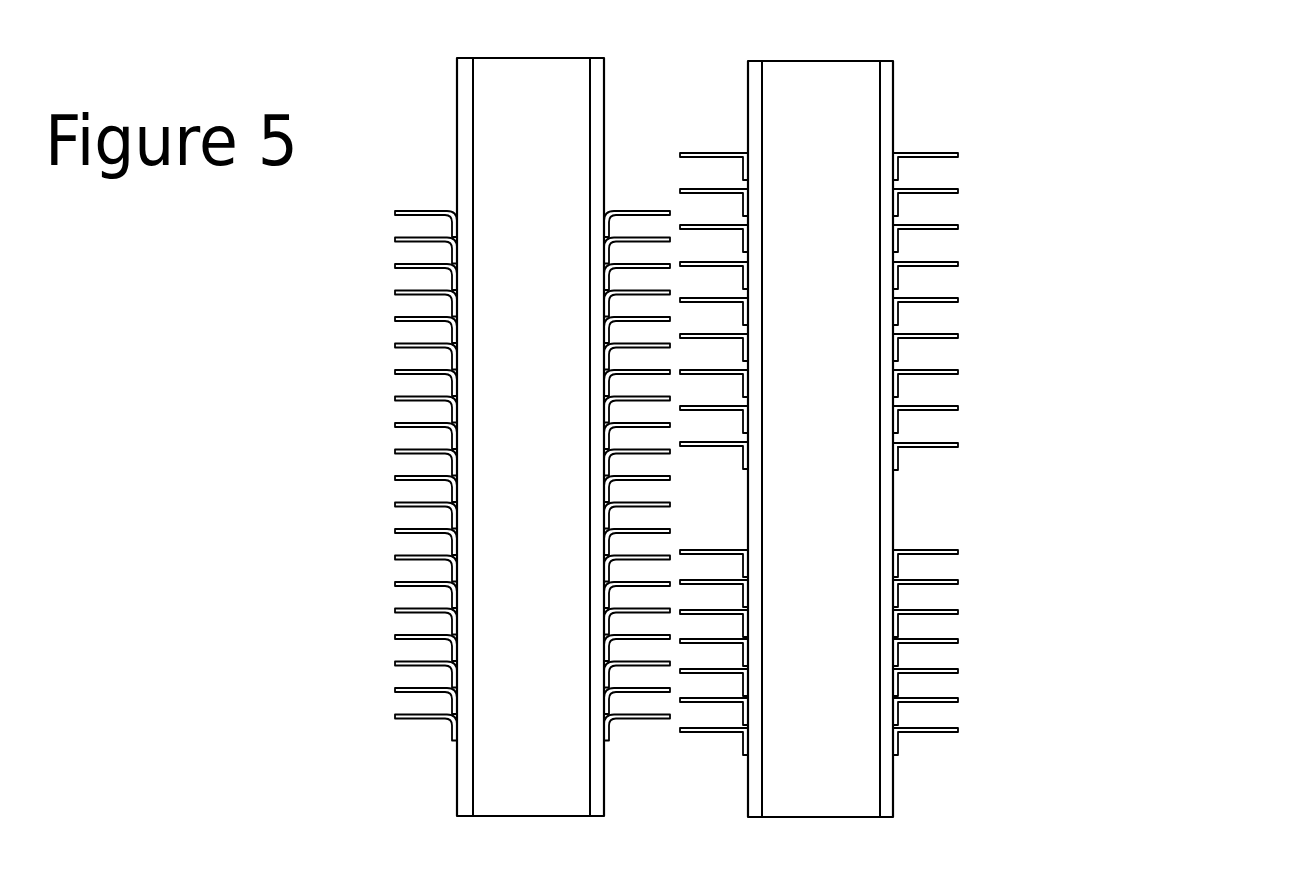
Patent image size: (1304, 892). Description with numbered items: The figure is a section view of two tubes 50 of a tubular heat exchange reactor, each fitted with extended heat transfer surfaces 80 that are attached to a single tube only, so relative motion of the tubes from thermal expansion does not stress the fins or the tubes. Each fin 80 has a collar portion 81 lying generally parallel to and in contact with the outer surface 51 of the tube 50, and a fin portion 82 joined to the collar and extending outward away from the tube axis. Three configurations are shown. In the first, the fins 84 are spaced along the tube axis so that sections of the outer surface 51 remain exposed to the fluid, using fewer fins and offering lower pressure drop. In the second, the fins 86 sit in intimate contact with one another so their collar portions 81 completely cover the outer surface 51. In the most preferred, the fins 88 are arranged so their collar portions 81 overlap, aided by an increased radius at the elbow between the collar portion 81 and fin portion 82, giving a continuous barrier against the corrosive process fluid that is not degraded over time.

The tube 50 is at (975, 78).
The outer surface of the tube 51 is at (745, 88).
The extended heat transfer surface 80 is at (962, 148).
The collar portion 81 is at (937, 485).
The fin portion 82 is at (943, 448).
The spaced fins 84 is at (909, 310).
The contacting fins 86 is at (1017, 545).
The overlapping-collar fins 88 is at (348, 205).